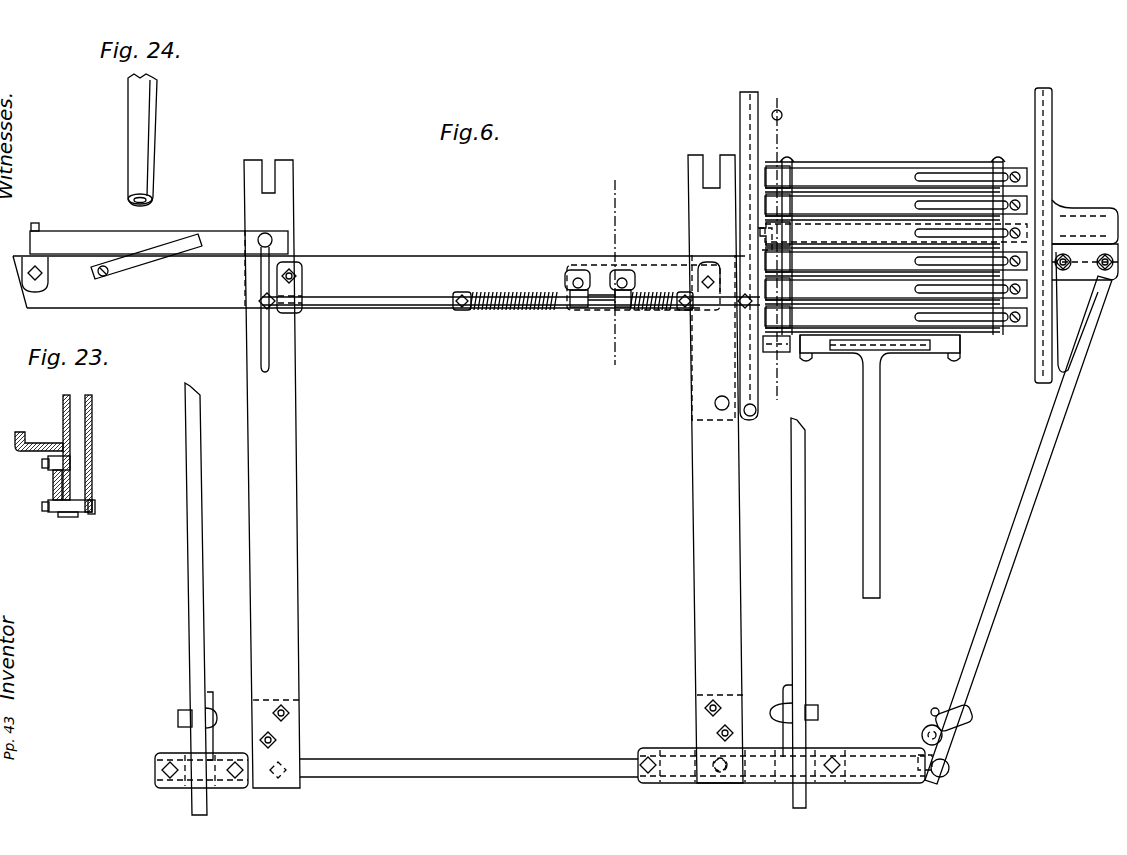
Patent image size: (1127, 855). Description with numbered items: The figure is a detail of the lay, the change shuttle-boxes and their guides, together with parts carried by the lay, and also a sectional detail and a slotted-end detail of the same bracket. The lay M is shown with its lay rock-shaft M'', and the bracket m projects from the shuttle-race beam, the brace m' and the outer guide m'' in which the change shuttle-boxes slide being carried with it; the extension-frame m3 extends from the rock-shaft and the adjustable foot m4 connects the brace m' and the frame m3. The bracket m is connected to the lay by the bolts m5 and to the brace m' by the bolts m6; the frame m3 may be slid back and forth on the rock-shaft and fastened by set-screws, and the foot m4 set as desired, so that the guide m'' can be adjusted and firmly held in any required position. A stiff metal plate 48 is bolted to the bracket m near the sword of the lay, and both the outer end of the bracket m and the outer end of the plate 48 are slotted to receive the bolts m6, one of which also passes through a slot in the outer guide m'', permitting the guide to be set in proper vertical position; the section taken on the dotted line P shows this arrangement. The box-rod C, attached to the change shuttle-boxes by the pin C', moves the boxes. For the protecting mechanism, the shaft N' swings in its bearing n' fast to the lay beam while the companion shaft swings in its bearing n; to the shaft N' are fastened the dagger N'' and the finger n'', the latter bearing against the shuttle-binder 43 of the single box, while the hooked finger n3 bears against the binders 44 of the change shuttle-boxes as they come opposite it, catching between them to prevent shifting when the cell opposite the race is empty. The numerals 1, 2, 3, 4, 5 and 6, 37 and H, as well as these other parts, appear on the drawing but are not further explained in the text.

In FIG. 6, the needle bar 6 is at (896, 320).
In FIG. 6, the needle bar 1 is at (896, 180).
In FIG. 6, the needle bar 2 is at (896, 208).
In FIG. 6, the needle bar 3 is at (896, 236).
In FIG. 6, the needle bar 4 is at (896, 264).
In FIG. 6, the needle bar 5 is at (896, 292).
In FIG. 6, the pivot pin 37 is at (785, 254).
In FIG. 6, the shuttle-binder of the single box 43 is at (159, 251).
In FIG. 6, the binders of the change shuttle-boxes 44 is at (775, 247).
In FIG. 23, the metal plate 48 is at (67, 440).
In FIG. 6, the box-rod C is at (880, 466).
In FIG. 6, the pin C' is at (880, 364).
In FIG. 6, the side bar H is at (185, 490).
In FIG. 6, the lay M is at (379, 471).
In FIG. 6, the lay rock-shaft M'' is at (396, 770).
In FIG. 6, the shaft N' is at (509, 322).
In FIG. 6, the dagger N'' is at (596, 315).
In FIG. 6, the section line P Q P is at (896, 235).
In FIG. 24, the bracket m is at (150, 140).
In FIG. 23, the bracket m is at (97, 453).
In FIG. 6, the bracket m is at (651, 337).
In FIG. 6, the brace m' is at (1018, 530).
In FIG. 23, the outer guide m'' is at (38, 434).
In FIG. 6, the outer guide m'' is at (1065, 235).
In FIG. 6, the extension-frame m3 is at (781, 765).
In FIG. 6, the adjustable foot m4 is at (948, 742).
In FIG. 6, the bolts m5 is at (576, 282).
In FIG. 23, the bolts m6 is at (98, 505).
In FIG. 6, the bolts m6 is at (1066, 270).
In FIG. 6, the bearing n is at (670, 311).
In FIG. 6, the bearing n' is at (432, 298).
In FIG. 6, the finger n'' is at (252, 302).
In FIG. 6, the finger n3 is at (745, 248).